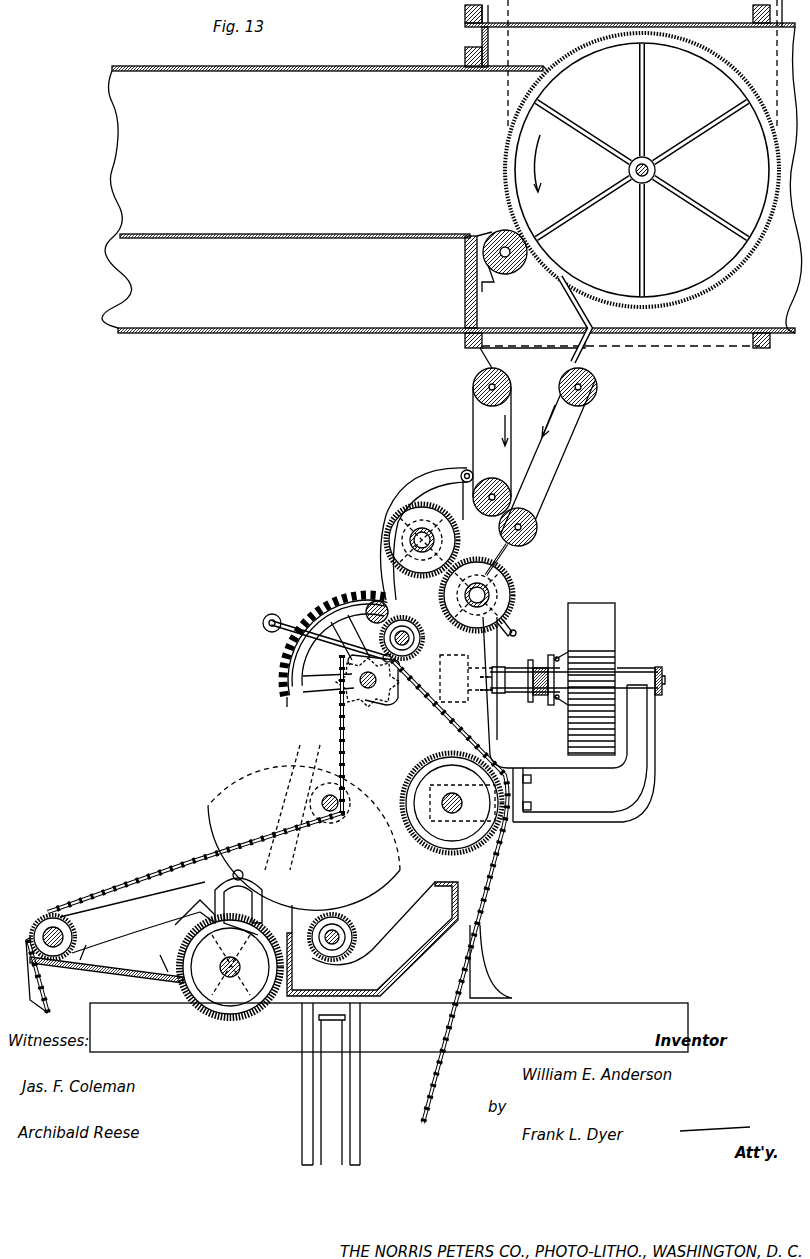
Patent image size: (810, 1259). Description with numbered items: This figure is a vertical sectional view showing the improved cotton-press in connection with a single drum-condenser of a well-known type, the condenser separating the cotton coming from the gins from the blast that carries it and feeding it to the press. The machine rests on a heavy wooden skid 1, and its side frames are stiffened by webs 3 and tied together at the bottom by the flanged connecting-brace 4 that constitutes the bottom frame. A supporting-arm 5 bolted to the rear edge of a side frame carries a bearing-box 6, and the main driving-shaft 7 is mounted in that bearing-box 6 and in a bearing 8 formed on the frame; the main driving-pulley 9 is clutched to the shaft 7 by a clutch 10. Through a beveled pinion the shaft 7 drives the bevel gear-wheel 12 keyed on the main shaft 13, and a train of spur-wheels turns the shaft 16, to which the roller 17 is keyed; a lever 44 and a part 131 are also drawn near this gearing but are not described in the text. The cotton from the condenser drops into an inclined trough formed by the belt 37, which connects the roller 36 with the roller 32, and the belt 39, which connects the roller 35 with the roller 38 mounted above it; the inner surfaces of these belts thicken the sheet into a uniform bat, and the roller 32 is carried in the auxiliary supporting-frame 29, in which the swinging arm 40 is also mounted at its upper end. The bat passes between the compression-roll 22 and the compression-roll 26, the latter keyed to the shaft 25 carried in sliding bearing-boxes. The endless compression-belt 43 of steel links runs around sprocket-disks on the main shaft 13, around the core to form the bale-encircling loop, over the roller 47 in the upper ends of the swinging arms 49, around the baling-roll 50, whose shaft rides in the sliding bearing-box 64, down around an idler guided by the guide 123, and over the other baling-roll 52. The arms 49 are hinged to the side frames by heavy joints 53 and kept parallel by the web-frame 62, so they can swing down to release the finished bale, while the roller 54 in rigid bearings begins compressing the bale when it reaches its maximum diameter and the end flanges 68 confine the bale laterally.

The skid 1 is at (562, 1032).
The web 3 is at (491, 961).
The flanged connecting-brace 4 is at (372, 939).
The supporting-arm 5 is at (569, 719).
The bearing-box 6 is at (660, 676).
The main driving-shaft 7 is at (525, 690).
The bearing 8 is at (498, 671).
The main driving-pulley 9 is at (591, 669).
The clutch 10 is at (548, 652).
The bevel gear-wheel 12 is at (286, 690).
The main shaft 13 is at (454, 678).
The shaft 16 is at (423, 640).
The roller 17 is at (395, 619).
The compression-roll 22 is at (386, 540).
The shaft 25 is at (488, 594).
The compression-roll 26 is at (514, 592).
The auxiliary supporting-frame 29 is at (491, 552).
The roller 32 is at (522, 512).
The roller 35 is at (492, 487).
The roller 36 is at (598, 392).
The belt 37 is at (548, 457).
The roller 38 is at (473, 387).
The belt 39 is at (492, 442).
The swinging arm 40 is at (452, 470).
The endless compression-belt 43 is at (496, 909).
The lever 44 is at (327, 638).
The roller 47 is at (55, 912).
The swinging arm 49 is at (161, 911).
The baling-roll 50 is at (230, 1017).
The baling-roll 52 is at (412, 830).
The joint 53 is at (233, 867).
The roller 54 is at (352, 930).
The web-frame 62 is at (106, 963).
The sliding bearing-box 64 is at (225, 978).
The end flange 68 is at (304, 827).
The guide 123 is at (360, 1080).
The sprocket 131 is at (384, 698).